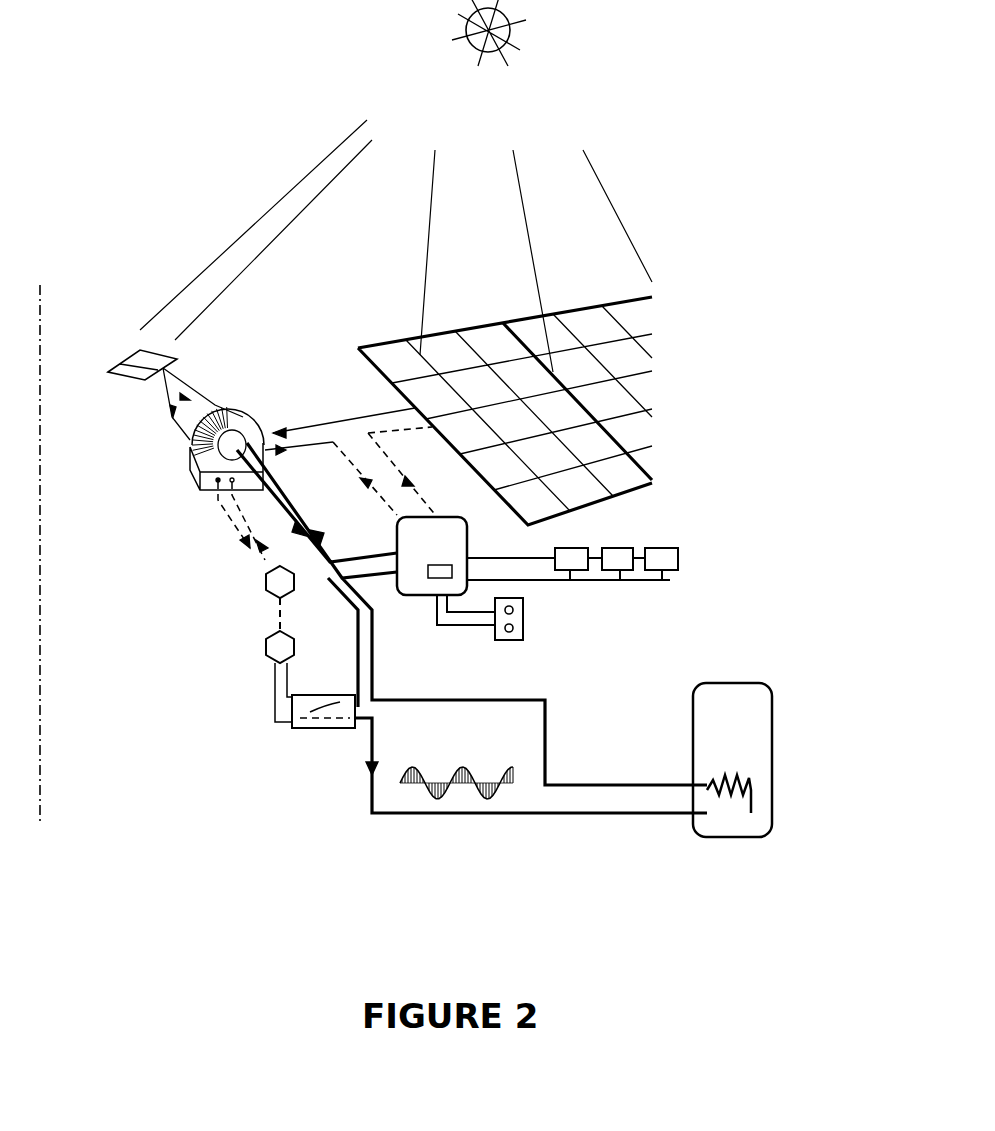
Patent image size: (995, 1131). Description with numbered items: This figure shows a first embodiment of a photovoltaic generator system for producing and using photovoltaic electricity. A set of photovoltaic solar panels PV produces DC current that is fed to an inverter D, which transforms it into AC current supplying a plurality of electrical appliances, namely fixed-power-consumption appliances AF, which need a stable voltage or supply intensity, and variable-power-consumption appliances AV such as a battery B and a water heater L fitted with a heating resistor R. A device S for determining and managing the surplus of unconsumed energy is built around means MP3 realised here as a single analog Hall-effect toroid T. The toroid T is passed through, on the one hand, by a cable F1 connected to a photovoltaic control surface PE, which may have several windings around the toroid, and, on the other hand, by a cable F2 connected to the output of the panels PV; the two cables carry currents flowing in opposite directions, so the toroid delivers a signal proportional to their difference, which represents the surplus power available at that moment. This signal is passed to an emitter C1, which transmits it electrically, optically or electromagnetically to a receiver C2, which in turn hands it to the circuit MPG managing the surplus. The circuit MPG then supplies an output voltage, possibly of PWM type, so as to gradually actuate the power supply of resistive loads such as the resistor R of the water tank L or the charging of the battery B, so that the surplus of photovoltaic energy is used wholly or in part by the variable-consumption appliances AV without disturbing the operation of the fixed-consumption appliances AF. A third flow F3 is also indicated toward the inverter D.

The photovoltaic solar panels PV is at (660, 368).
The control sensor PE is at (125, 348).
The Hall-effect toroid T is at (182, 487).
The means for determining the surplus of power MP3 is at (150, 405).
The cable F1 is at (228, 400).
The cable F2 is at (285, 420).
The third flow (PWM current) F3 is at (280, 477).
The emitter C1 is at (264, 580).
The receiver C2 is at (262, 648).
The circuit for managing the surplus MPG is at (322, 737).
The inverter D is at (432, 556).
The fixed-power-consumption appliances AF is at (706, 544).
The electric battery B is at (530, 612).
The water heater L is at (688, 703).
The heating resistor R is at (737, 768).
The variable-power-consumption appliances AV is at (800, 650).
The pulse-width modulation PWM is at (456, 812).
The device for determining and managing the surplus S is at (40, 838).